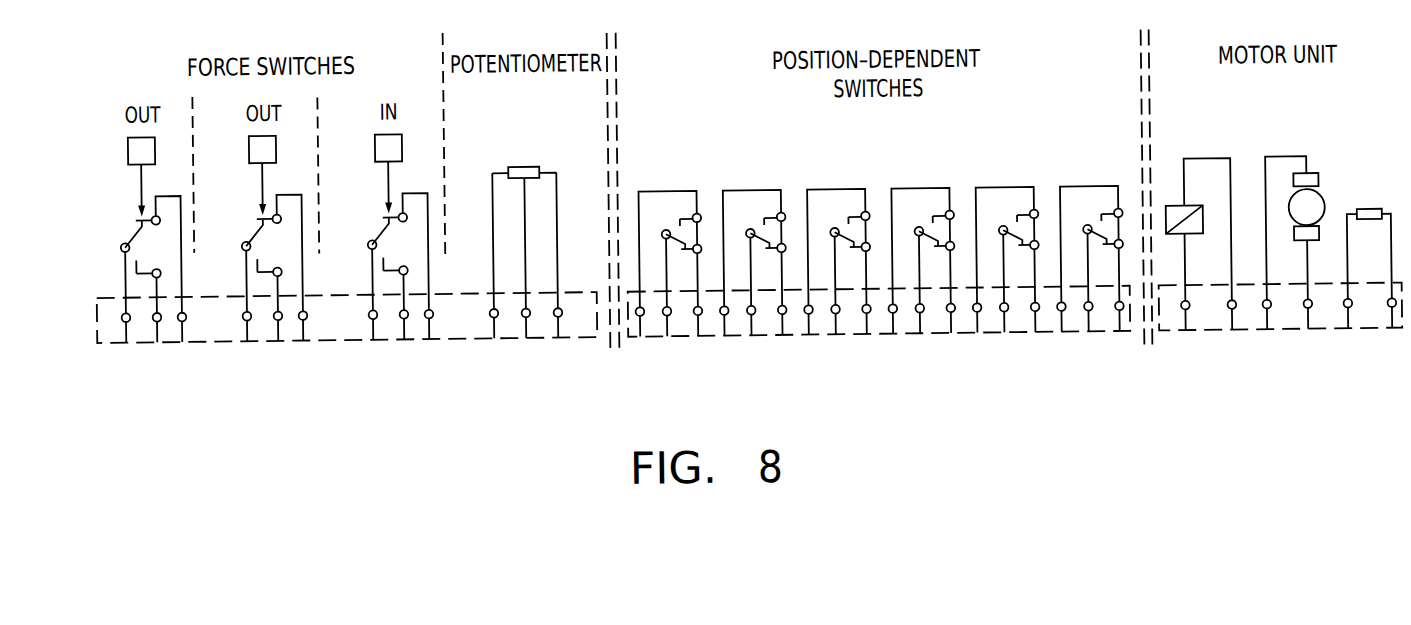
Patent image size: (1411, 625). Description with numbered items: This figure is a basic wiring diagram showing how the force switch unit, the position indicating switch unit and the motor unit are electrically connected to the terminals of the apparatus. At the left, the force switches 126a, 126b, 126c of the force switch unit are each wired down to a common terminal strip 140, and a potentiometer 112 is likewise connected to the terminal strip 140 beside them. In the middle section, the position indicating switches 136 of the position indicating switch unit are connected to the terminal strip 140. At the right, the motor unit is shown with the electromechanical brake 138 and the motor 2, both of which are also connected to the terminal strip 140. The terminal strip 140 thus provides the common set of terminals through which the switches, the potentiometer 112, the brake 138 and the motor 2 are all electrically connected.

The motor 2 is at (1328, 213).
The potentiometer 112 is at (534, 172).
The force switch 126a is at (113, 240).
The force switch 126b is at (234, 240).
The force switch 126c is at (360, 240).
The position indicating switches 136 is at (939, 182).
The electromechanical brake 138 is at (1174, 218).
The terminal strip 140 is at (1191, 358).